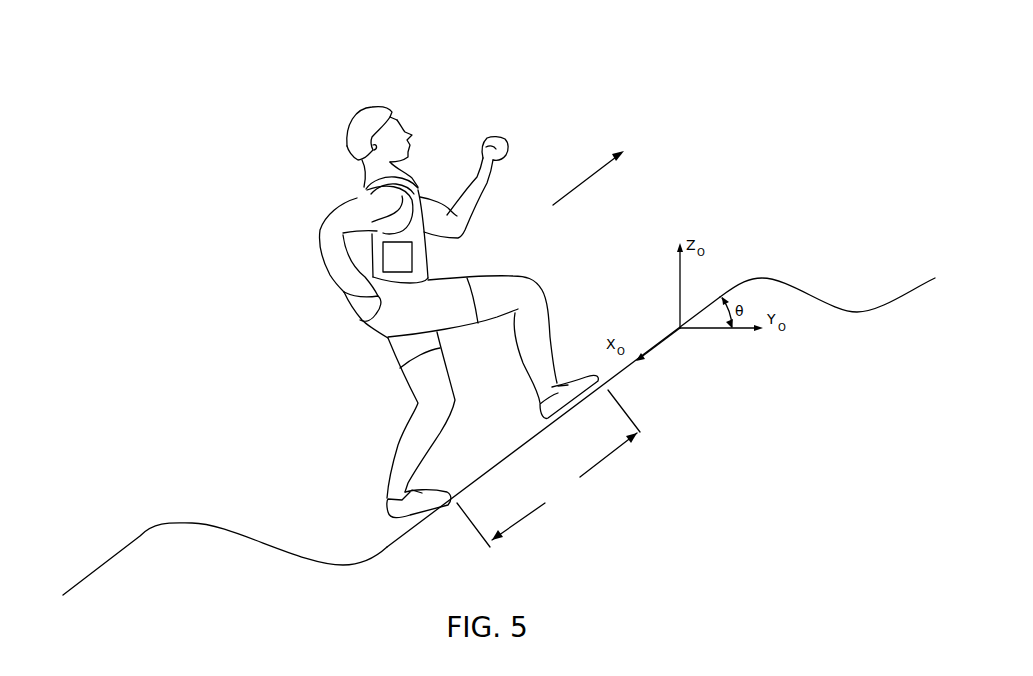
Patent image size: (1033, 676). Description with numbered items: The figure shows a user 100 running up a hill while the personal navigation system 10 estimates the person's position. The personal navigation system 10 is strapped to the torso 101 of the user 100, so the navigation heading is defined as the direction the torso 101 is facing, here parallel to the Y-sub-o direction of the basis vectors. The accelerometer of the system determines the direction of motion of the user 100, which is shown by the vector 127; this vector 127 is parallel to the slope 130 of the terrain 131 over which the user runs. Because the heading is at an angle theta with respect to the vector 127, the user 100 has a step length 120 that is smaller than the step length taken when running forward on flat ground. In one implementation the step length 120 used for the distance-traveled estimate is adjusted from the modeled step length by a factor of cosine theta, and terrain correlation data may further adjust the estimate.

The user 100 is at (380, 80).
The torso 101 is at (366, 190).
The personal navigation system 10 is at (397, 257).
The vector 127 is at (587, 181).
The step length 120 is at (548, 468).
The slope 130 is at (400, 545).
The terrain 131 is at (97, 530).